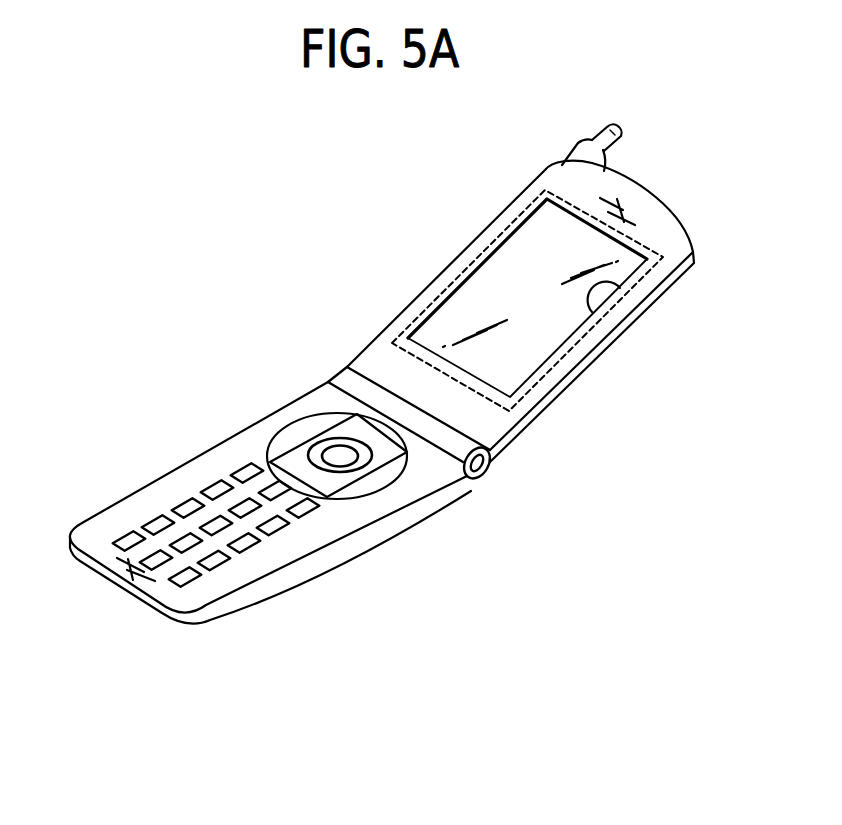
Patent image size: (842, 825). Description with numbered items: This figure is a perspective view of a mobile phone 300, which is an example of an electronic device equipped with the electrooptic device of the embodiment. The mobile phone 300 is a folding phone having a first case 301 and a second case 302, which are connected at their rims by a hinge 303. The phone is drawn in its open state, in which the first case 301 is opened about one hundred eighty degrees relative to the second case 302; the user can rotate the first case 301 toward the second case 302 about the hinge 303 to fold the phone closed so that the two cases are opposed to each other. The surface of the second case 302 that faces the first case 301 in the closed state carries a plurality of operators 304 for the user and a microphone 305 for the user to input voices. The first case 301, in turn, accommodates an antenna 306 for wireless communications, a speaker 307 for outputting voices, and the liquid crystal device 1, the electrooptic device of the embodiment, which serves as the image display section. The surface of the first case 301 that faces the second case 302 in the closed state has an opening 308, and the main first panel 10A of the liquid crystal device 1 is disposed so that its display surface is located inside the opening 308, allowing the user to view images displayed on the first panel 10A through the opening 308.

The liquid crystal device 1 is at (505, 218).
The first panel 10A is at (490, 282).
The mobile phone 300 is at (205, 312).
The first case 301 is at (592, 360).
The second case 302 is at (165, 487).
The hinge 303 is at (490, 467).
The operators 304 is at (283, 532).
The microphone 305 is at (124, 582).
The antenna 306 is at (620, 128).
The speaker 307 is at (622, 196).
The opening 308 is at (592, 311).